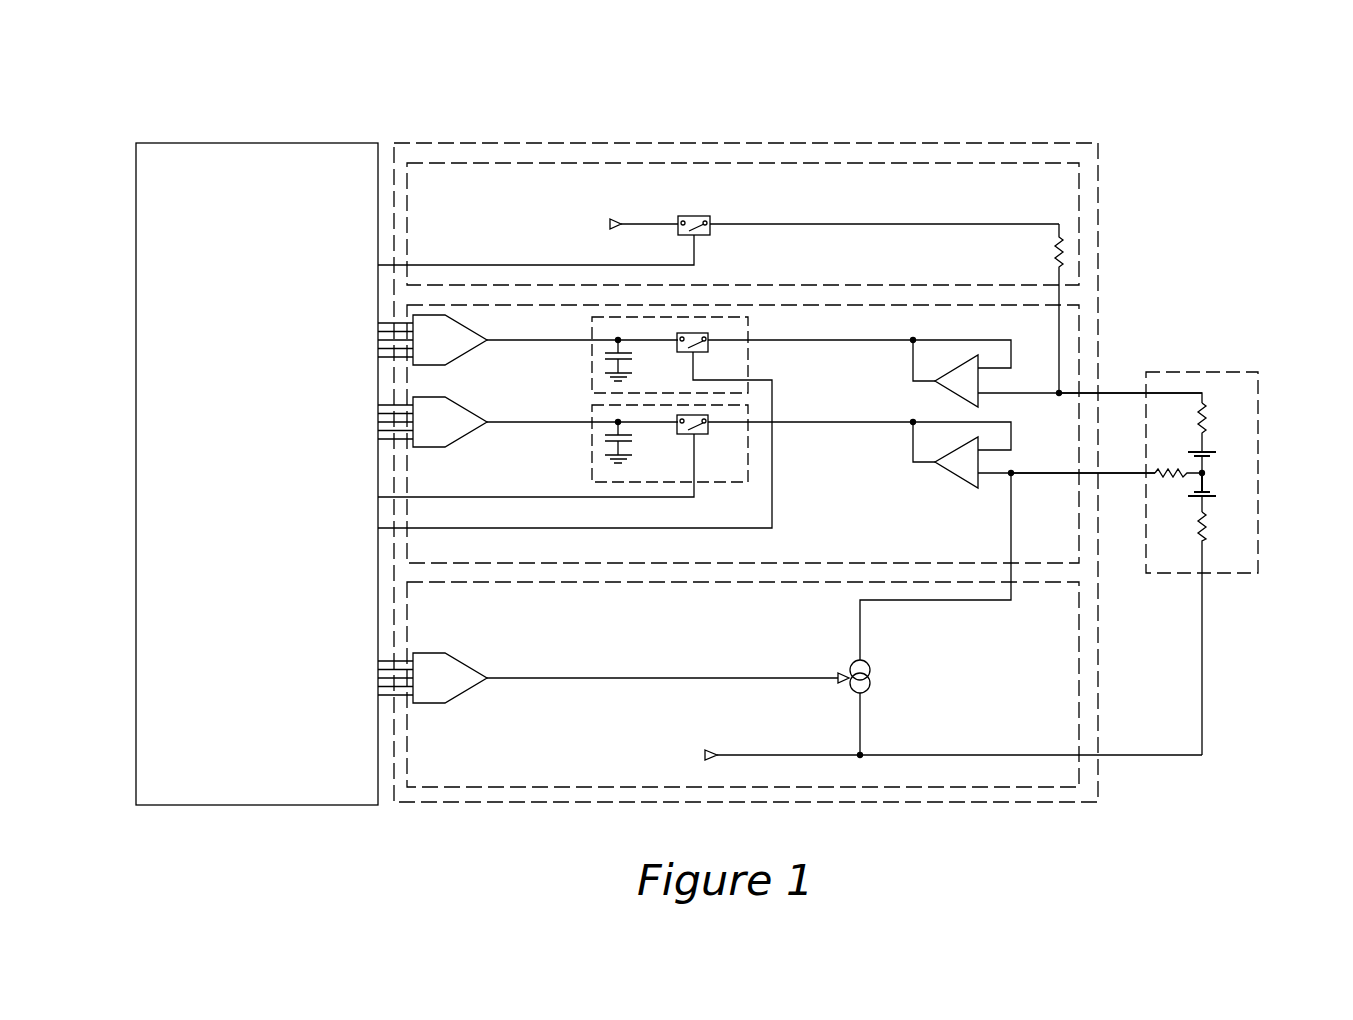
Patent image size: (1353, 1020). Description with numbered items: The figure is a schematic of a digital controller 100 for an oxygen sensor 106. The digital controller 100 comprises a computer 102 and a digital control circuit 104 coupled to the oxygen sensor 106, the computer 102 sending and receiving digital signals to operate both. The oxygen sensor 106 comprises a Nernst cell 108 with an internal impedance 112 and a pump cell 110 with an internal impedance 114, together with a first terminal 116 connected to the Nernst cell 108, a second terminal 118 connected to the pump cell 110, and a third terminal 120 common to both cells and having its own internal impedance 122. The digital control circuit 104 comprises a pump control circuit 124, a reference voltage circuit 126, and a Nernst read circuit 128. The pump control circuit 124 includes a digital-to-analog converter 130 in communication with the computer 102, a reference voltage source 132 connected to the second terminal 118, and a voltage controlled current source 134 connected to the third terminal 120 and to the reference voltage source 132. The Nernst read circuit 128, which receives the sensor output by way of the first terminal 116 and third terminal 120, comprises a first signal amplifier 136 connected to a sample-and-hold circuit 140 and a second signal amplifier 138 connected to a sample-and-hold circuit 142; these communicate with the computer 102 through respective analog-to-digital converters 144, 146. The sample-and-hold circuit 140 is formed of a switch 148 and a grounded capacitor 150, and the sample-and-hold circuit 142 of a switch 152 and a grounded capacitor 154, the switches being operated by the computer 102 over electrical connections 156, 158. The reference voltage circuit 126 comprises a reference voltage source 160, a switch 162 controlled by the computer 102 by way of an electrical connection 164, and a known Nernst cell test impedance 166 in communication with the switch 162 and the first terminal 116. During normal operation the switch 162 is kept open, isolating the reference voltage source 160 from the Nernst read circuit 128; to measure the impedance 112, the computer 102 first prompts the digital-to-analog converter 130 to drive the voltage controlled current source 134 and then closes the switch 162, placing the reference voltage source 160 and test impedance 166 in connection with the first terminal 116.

The digital controller 100 is at (797, 90).
The computer 102 is at (257, 474).
The digital control circuit 104 is at (903, 143).
The oxygen sensor 106 is at (1223, 372).
The Nernst cell 108 is at (1208, 452).
The pump cell 110 is at (1210, 497).
The internal impedance 112 is at (1208, 418).
The internal impedance 114 is at (1208, 522).
The first terminal 116 is at (1116, 393).
The second terminal 118 is at (1204, 640).
The third terminal 120 is at (1111, 472).
The internal impedance 122 is at (1168, 478).
The pump control circuit 124 is at (743, 684).
The reference voltage circuit 126 is at (743, 224).
The Nernst read circuit 128 is at (743, 434).
The digital-to-analog converter 130 is at (430, 703).
The reference voltage source 132 is at (712, 748).
The voltage controlled current source 134 is at (872, 666).
The first signal amplifier 136 is at (948, 393).
The second signal amplifier 138 is at (952, 478).
The sample-and-hold circuit 140 is at (748, 334).
The sample-and-hold circuit 142 is at (748, 454).
The analog-to-digital converter 144 is at (458, 362).
The analog-to-digital converter 146 is at (428, 447).
The switch 148 is at (698, 352).
The grounded capacitor 150 is at (626, 360).
The switch 152 is at (698, 434).
The grounded capacitor 154 is at (626, 442).
The electrical connection 156 is at (680, 529).
The electrical connection 158 is at (680, 498).
The reference voltage source 160 is at (616, 218).
The switch 162 is at (700, 216).
The electrical connection 164 is at (700, 252).
The Nernst cell test impedance 166 is at (1053, 250).